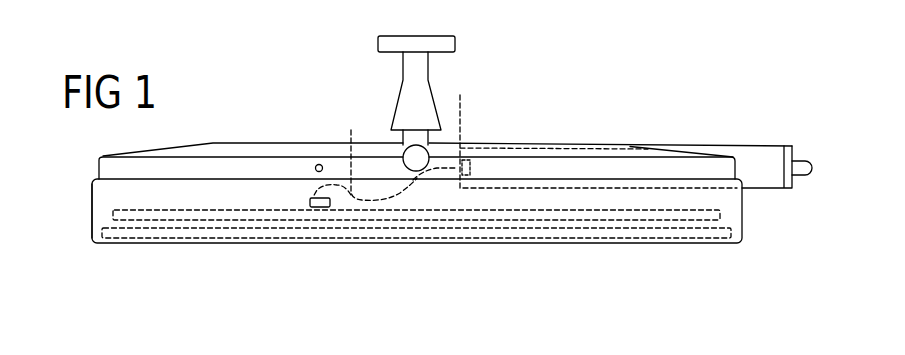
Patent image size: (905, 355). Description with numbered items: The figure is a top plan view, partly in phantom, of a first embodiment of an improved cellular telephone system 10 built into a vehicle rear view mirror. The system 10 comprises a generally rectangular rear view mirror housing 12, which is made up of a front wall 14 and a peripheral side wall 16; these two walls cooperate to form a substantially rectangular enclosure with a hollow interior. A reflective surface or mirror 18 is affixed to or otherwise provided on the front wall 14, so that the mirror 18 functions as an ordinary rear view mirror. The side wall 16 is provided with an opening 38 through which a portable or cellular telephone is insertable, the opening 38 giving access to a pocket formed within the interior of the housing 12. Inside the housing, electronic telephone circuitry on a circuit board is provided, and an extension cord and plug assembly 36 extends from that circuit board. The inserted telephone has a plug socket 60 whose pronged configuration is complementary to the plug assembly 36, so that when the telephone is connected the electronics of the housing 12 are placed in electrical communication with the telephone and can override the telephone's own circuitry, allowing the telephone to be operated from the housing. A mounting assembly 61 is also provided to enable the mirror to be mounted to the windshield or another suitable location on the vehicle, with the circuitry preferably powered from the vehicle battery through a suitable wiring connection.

The cellular telephone system 10 is at (657, 102).
The rear view mirror housing 12 is at (743, 227).
The front wall 14 is at (575, 140).
The peripheral side wall 16 is at (92, 208).
The mirror 18 is at (507, 170).
The extension cord and plug assembly 36 is at (351, 130).
The opening 38 is at (638, 172).
The plug socket 60 is at (460, 95).
The mounting assembly 61 is at (393, 36).